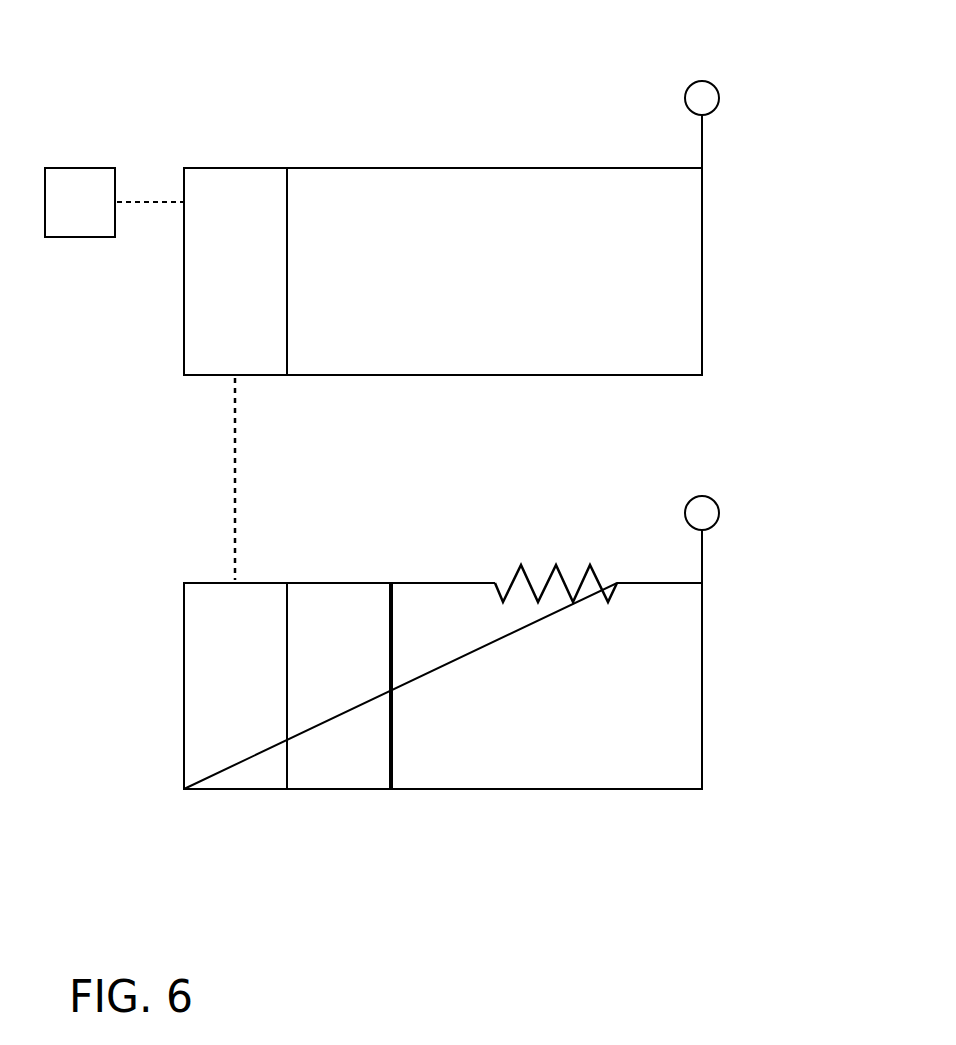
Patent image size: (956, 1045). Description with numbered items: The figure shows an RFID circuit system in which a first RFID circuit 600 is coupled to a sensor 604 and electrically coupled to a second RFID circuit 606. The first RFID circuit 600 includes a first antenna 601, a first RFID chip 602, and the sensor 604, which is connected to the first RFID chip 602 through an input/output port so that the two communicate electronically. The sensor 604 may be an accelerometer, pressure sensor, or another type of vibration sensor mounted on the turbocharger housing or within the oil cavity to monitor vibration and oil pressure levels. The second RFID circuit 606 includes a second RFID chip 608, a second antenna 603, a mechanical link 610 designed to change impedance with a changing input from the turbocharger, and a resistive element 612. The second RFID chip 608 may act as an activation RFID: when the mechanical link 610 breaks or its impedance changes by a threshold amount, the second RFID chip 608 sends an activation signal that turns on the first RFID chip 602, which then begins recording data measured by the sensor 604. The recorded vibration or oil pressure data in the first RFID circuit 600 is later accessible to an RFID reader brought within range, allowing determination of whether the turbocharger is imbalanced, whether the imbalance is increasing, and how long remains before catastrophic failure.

The first RFID circuit 600 is at (783, 55).
The antenna 601 is at (685, 98).
The first RFID chip 602 is at (235, 271).
The second antenna 603 is at (685, 513).
The sensor 604 is at (114, 202).
The second RFID circuit 606 is at (781, 713).
The second RFID chip 608 is at (235, 686).
The mechanical link 610 is at (393, 634).
The resistive element 612 is at (556, 564).